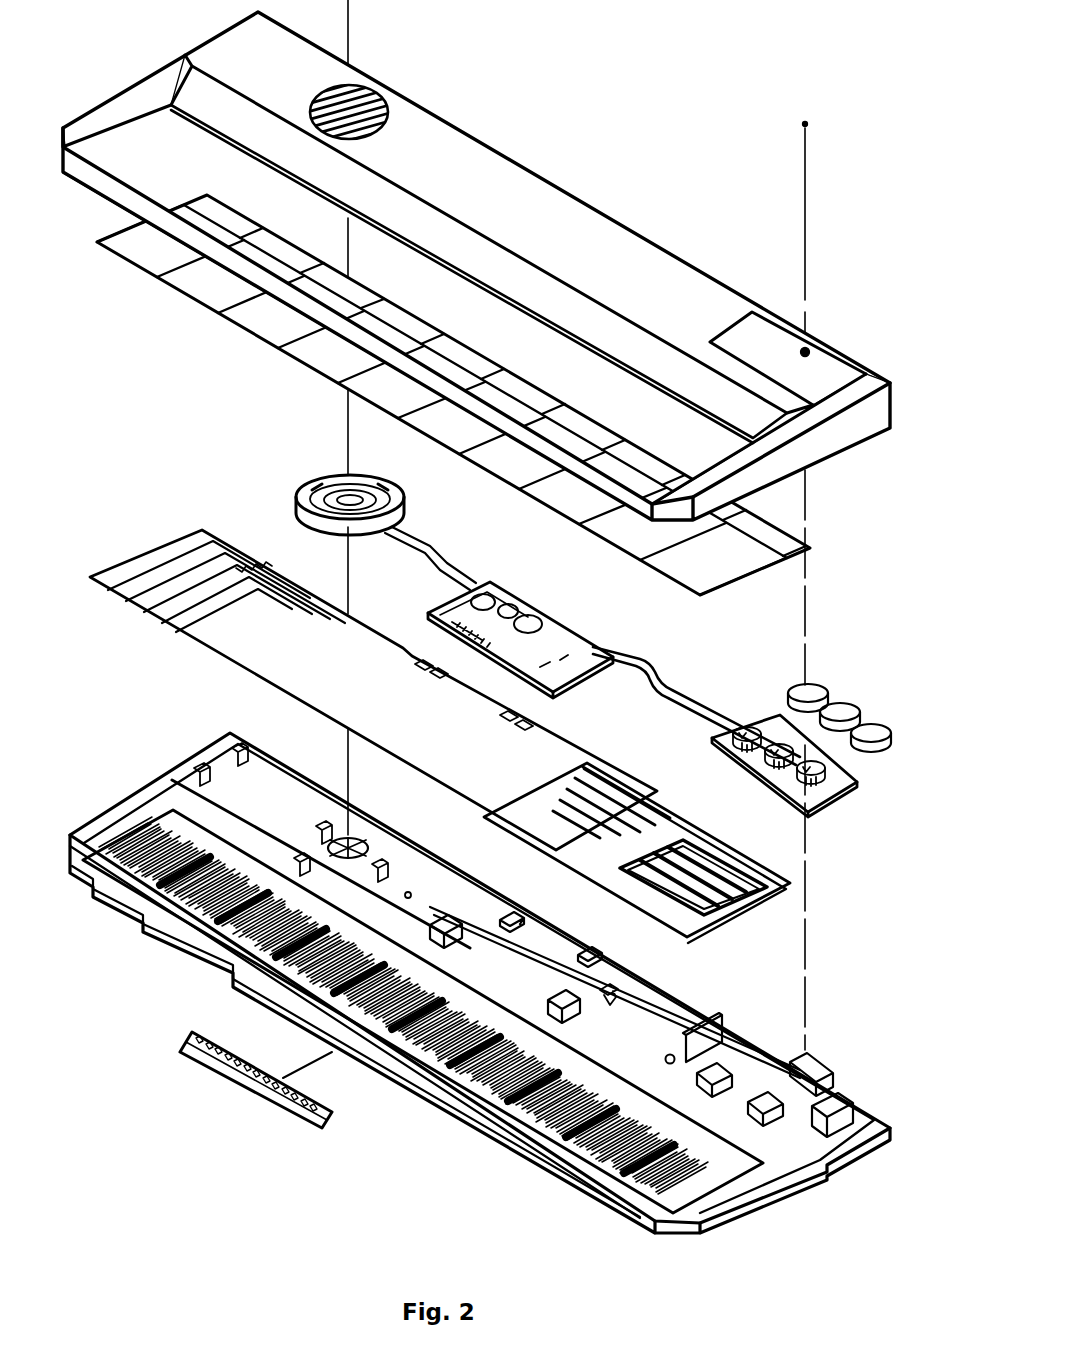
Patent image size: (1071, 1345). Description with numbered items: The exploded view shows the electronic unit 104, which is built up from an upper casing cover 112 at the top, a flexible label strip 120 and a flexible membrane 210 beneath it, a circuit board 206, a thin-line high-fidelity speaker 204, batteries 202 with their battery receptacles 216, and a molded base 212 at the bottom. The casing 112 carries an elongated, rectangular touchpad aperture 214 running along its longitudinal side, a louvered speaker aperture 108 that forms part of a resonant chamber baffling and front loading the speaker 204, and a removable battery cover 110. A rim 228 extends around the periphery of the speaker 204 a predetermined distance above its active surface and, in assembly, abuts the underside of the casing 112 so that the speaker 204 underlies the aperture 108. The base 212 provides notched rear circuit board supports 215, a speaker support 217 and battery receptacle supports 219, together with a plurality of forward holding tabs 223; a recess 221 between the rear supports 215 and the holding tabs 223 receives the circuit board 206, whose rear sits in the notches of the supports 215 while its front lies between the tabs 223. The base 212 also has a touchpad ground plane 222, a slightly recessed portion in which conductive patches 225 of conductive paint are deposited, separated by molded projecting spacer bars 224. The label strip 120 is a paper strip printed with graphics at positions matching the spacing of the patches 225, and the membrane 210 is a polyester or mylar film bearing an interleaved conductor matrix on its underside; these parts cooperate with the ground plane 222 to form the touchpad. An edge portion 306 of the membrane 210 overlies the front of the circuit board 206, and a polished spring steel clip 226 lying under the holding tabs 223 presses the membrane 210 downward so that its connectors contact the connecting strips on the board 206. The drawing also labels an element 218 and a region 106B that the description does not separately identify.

The electronic unit 104 is at (704, 150).
The louvered speaker aperture 108 is at (380, 107).
The removable battery cover 110 is at (833, 350).
The upper casing cover 112 is at (598, 212).
The flexible label strip 120 is at (798, 549).
The batteries 202 is at (862, 708).
The thin-line high-fidelity speaker 204 is at (443, 503).
The circuit board 206 is at (562, 620).
The flexible membrane 210 is at (128, 562).
The molded base 212 is at (115, 802).
The touchpad aperture 214 is at (135, 137).
The notched rear circuit board supports 215 is at (530, 917).
The battery receptacles 216 is at (788, 780).
The speaker support 217 is at (393, 846).
The flexible cable 218 is at (668, 708).
The battery receptacle supports 219 is at (803, 1108).
The recess 221 is at (673, 1020).
The touchpad ground plane 222 is at (760, 1167).
The forward holding tabs 223 is at (457, 913).
The projecting spacer bars 224 is at (453, 1074).
The conductive patches 225 is at (533, 1113).
The clip 226 is at (323, 1130).
The rim 228 is at (333, 481).
The edge portion of membrane 306 is at (547, 726).
The microphone grille platform 106B is at (590, 877).